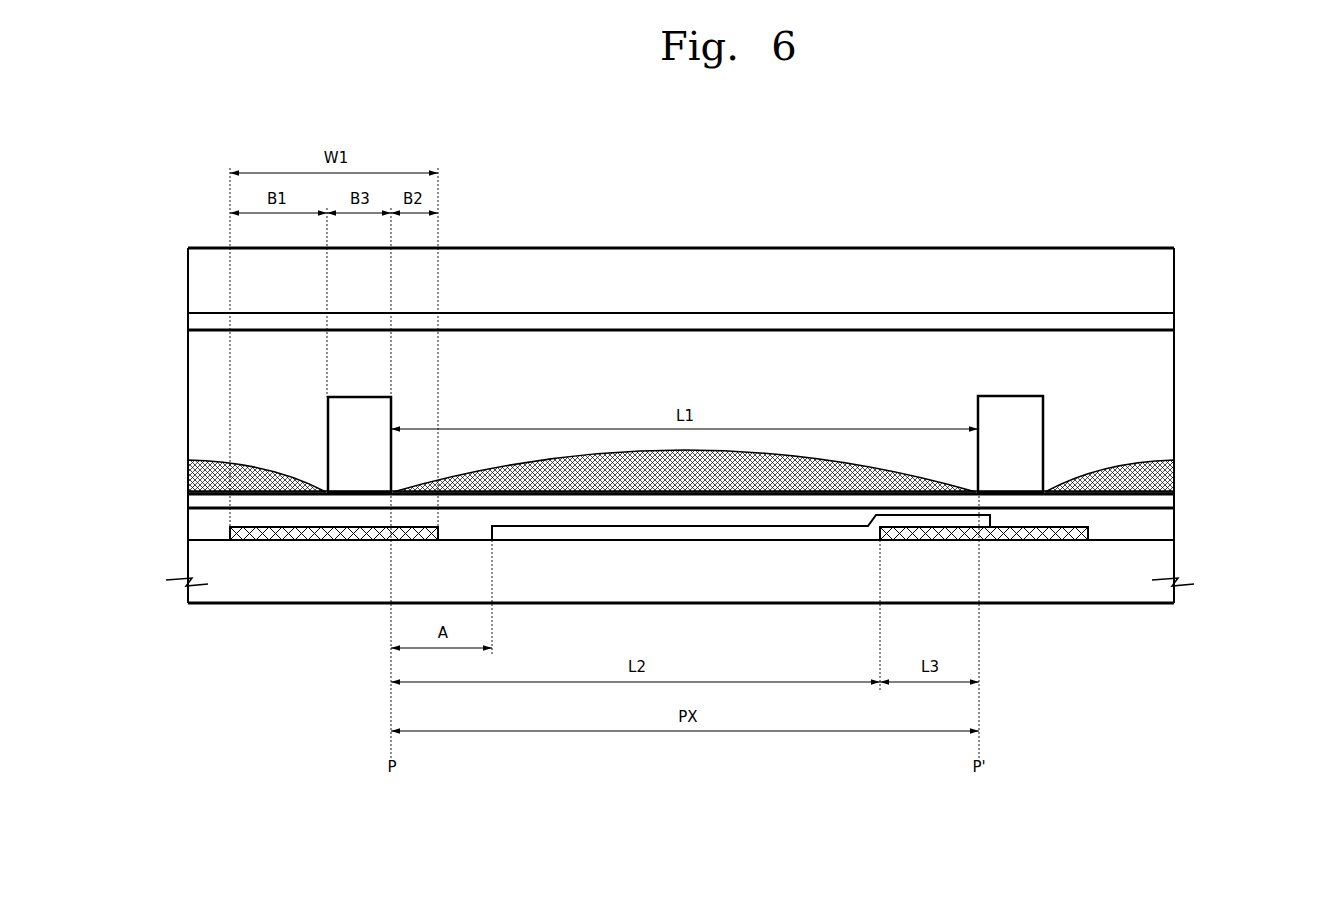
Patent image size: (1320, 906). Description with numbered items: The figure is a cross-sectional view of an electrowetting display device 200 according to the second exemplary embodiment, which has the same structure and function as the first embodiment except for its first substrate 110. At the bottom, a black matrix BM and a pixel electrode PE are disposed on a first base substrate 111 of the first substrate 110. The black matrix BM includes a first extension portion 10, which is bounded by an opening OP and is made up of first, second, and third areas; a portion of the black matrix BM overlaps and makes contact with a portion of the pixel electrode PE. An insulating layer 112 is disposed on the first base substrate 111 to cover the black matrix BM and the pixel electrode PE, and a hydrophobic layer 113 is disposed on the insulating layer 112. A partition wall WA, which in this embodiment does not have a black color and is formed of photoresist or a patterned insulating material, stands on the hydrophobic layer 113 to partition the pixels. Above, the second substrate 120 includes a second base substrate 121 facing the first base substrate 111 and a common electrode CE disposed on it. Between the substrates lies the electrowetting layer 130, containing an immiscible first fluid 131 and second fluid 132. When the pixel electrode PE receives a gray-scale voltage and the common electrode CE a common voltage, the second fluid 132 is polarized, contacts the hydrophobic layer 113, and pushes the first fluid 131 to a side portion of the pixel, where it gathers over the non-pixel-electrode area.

The electrowetting display device 200 is at (1058, 146).
The second substrate 120 is at (740, 290).
The second base substrate 121 is at (1163, 278).
The common electrode CE is at (1158, 318).
The electrowetting layer 130 is at (681, 326).
The first fluid 131 is at (743, 465).
The second fluid 132 is at (808, 406).
The partition wall WA is at (1028, 420).
The pixel electrode PE is at (957, 492).
The first substrate 110 is at (729, 507).
The hydrophobic layer 113 is at (1165, 498).
The insulating layer 112 is at (1165, 527).
The black matrix BM is at (1088, 532).
The first base substrate 111 is at (704, 547).
The first extension portion 10 is at (362, 541).
The opening OP is at (450, 533).